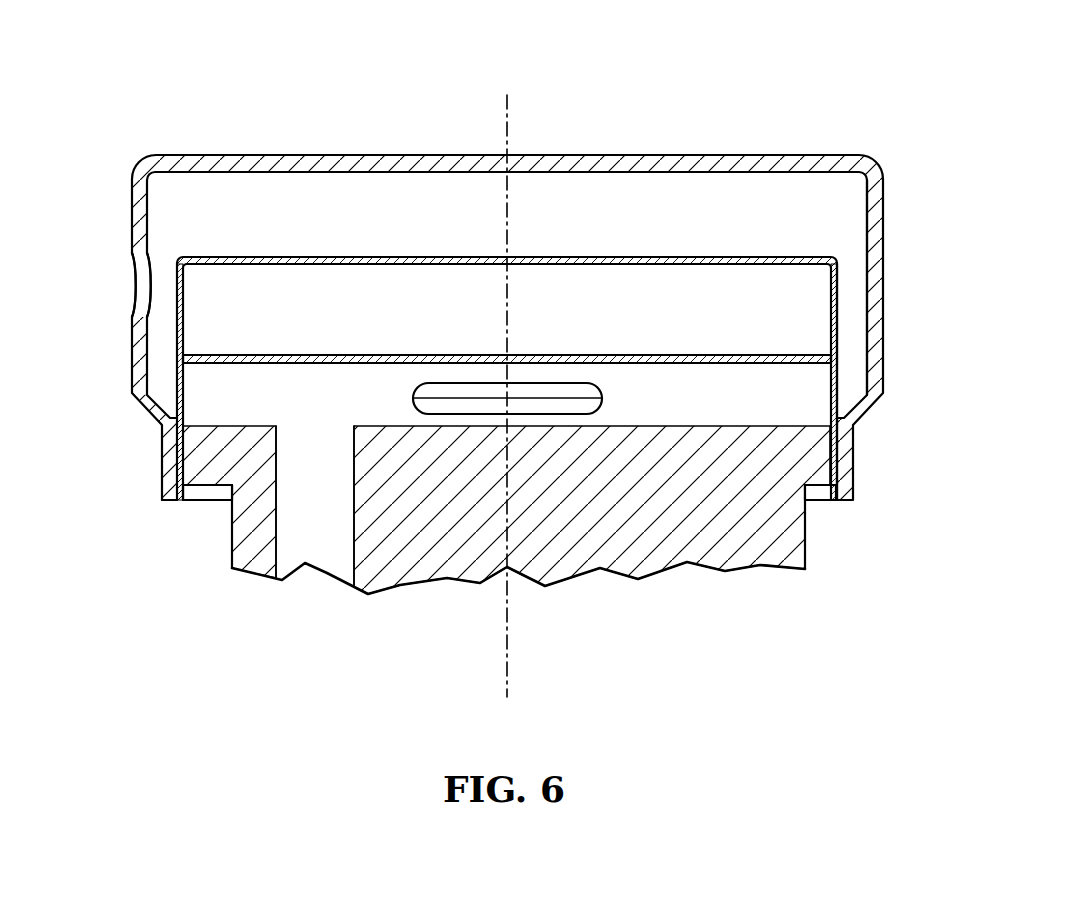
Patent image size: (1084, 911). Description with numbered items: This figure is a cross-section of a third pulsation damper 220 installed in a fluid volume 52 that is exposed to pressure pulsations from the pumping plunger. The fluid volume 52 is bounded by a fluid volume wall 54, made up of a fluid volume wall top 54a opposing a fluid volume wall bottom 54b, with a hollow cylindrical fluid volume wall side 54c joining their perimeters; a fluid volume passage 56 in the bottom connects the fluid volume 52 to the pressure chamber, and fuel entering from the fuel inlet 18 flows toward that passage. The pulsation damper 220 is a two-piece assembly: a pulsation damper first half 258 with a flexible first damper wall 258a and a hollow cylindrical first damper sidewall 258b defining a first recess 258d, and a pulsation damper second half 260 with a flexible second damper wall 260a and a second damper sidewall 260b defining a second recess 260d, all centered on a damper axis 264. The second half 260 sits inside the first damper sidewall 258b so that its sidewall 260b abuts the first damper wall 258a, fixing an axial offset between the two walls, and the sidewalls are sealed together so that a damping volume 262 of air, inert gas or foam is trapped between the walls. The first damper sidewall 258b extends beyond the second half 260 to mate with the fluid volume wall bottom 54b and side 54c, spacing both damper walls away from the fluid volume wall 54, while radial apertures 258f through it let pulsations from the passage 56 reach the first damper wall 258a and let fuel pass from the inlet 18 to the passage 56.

The fuel inlet 18 is at (143, 290).
The fluid volume 52 is at (664, 210).
The fluid volume wall 54 is at (780, 155).
The fluid volume wall top 54a is at (254, 155).
The fluid volume wall bottom 54b is at (688, 530).
The fluid volume wall side 54c is at (137, 215).
The fluid volume passage 56 is at (327, 542).
The pulsation damper 220 is at (583, 200).
The pulsation damper first half 258 is at (482, 256).
The first damper wall 258a is at (370, 257).
The first damper sidewall 258b is at (158, 403).
The first recess 258d is at (795, 292).
The apertures 258f is at (470, 413).
The pulsation damper second half 260 is at (534, 456).
The second damper wall 260a is at (633, 363).
The second damper sidewall 260b is at (190, 328).
The second recess 260d is at (833, 330).
The damping volume 262 is at (885, 320).
The damper axis 264 is at (508, 633).